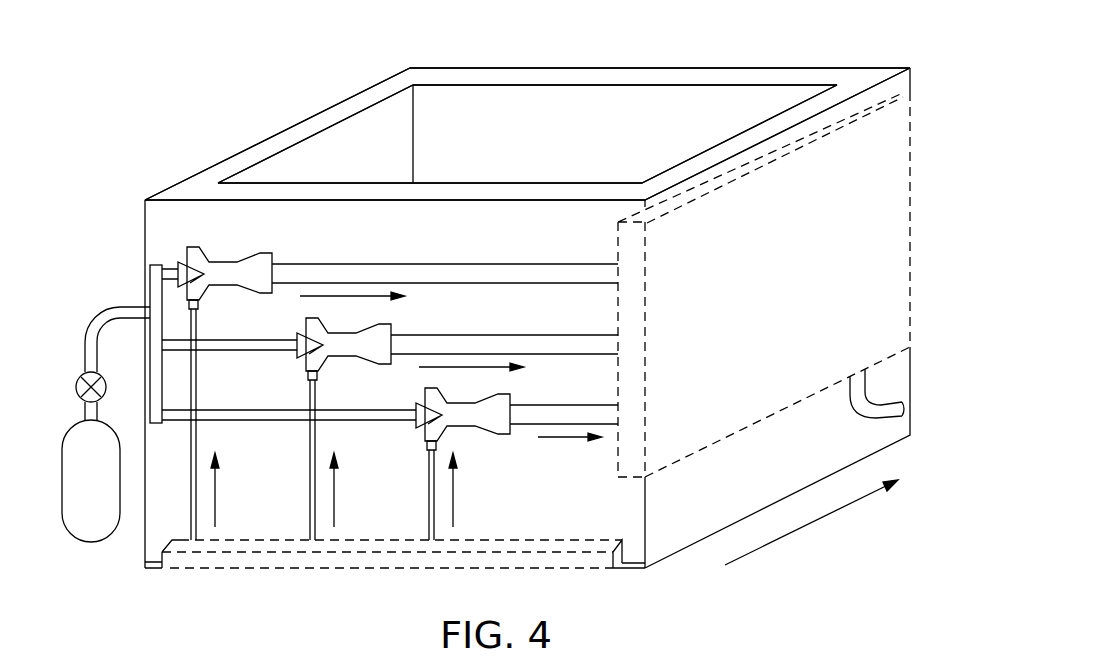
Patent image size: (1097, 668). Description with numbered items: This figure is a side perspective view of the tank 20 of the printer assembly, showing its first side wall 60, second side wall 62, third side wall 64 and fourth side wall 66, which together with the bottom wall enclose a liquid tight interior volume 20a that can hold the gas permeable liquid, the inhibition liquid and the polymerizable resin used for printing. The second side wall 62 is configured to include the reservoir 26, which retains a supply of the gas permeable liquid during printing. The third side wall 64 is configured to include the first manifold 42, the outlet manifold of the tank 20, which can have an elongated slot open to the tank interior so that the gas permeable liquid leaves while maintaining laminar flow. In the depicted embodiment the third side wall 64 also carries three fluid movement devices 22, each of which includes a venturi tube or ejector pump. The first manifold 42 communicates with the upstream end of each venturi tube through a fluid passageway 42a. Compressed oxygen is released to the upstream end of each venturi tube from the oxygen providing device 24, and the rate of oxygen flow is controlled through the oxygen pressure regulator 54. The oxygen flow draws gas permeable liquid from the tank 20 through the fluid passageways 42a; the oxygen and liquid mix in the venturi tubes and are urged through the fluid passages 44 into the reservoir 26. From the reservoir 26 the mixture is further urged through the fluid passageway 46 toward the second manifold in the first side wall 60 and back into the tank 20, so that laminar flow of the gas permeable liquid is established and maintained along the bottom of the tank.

The tank 20 is at (755, 30).
The interior volume 20a is at (452, 121).
The fluid movement device 22 is at (222, 286).
The oxygen providing device 24 is at (108, 539).
The reservoir 26 is at (858, 208).
The first manifold 42 is at (572, 558).
The fluid passageway 42a is at (197, 443).
The fluid passage 44 is at (472, 262).
The fluid passageway 46 is at (883, 403).
The oxygen pressure regulator 54 is at (78, 380).
The first side wall 60 is at (573, 78).
The second side wall 62 is at (727, 150).
The third side wall 64 is at (533, 192).
The fourth side wall 66 is at (310, 128).